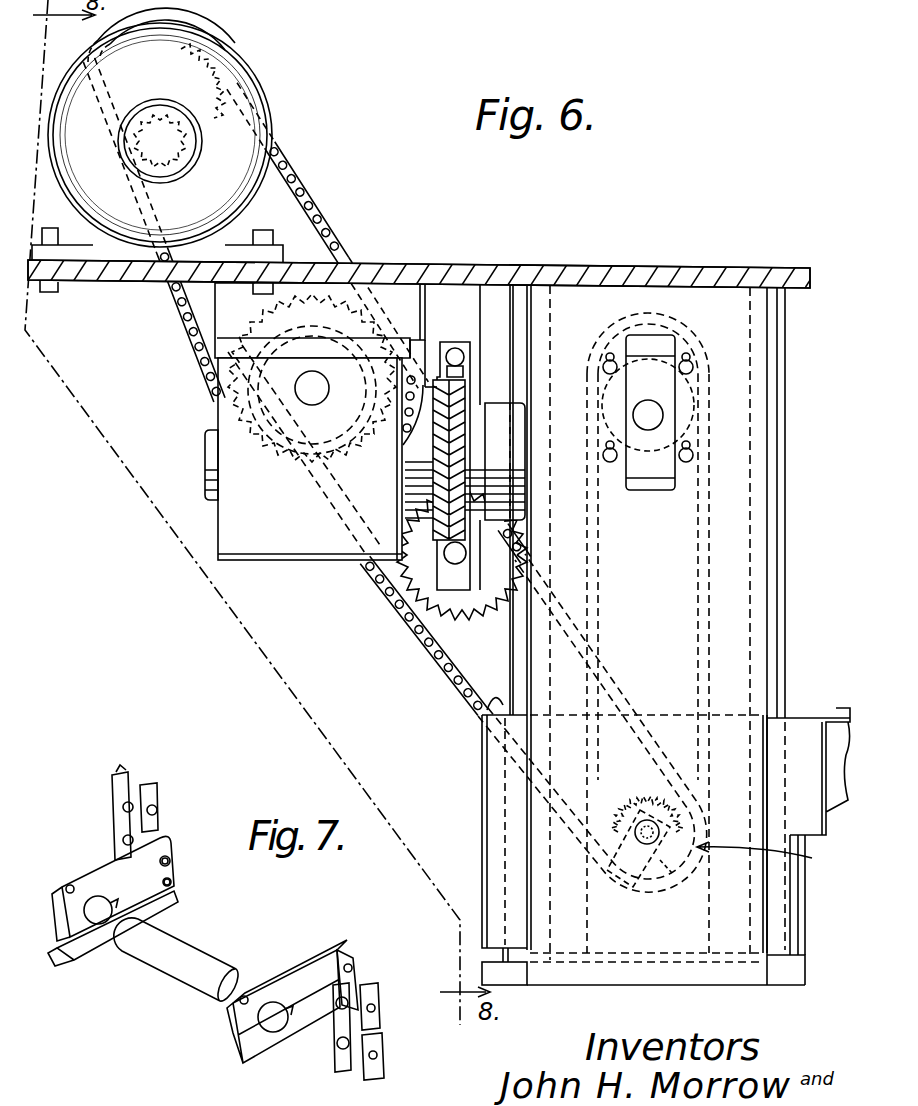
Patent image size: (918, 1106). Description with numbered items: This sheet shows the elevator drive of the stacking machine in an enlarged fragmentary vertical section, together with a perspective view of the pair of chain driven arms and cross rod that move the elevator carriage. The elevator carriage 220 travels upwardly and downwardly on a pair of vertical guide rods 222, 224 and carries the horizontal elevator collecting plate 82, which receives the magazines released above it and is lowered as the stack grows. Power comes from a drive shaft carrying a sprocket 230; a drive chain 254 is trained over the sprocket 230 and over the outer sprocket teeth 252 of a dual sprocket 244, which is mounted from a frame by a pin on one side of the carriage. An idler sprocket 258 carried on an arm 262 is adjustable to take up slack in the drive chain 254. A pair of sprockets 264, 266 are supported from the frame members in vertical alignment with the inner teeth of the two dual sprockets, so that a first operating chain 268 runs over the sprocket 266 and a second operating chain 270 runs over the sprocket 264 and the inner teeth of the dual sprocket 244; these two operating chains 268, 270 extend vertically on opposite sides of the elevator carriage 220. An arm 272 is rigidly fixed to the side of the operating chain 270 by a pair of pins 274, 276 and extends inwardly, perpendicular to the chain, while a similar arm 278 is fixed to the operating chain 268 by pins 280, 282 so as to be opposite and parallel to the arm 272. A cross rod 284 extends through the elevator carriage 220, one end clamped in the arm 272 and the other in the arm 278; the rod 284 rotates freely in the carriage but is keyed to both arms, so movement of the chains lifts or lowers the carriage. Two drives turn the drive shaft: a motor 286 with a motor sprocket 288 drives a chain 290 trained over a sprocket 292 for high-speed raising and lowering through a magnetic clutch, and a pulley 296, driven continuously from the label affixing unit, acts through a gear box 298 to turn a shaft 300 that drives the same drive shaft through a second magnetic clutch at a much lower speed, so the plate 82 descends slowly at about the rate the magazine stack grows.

In FIG. 6, the elevator collecting plate 82 is at (833, 710).
In FIG. 6, the elevator carriage 220 is at (482, 817).
In FIG. 6, the vertical guide rod 222 is at (478, 700).
In FIG. 6, the vertical guide rod 224 is at (783, 620).
In FIG. 6, the sprocket 230 is at (320, 421).
In FIG. 6, the dual sprocket 244 is at (774, 857).
In FIG. 6, the outer sprocket teeth 252 is at (630, 790).
In FIG. 6, the drive chain 254 is at (424, 640).
In FIG. 6, the idler sprocket 258 is at (452, 622).
In FIG. 6, the arm 262 is at (545, 570).
In FIG. 6, the sprocket 264 is at (641, 392).
In FIG. 6, the sprocket 266 is at (648, 378).
In FIG. 6, the first operating chain 268 is at (648, 453).
In FIG. 7, the first operating chain 268 is at (160, 800).
In FIG. 6, the second operating chain 270 is at (693, 563).
In FIG. 7, the second operating chain 270 is at (330, 1068).
In FIG. 6, the arm 272 is at (653, 850).
In FIG. 7, the arm 272 is at (293, 967).
In FIG. 7, the pin 274 is at (350, 970).
In FIG. 7, the pin 276 is at (360, 990).
In FIG. 7, the arm 278 is at (97, 867).
In FIG. 7, the pin 280 is at (168, 858).
In FIG. 7, the pin 282 is at (170, 883).
In FIG. 6, the cross rod 284 is at (672, 873).
In FIG. 7, the cross rod 284 is at (173, 967).
In FIG. 6, the motor 286 is at (243, 138).
In FIG. 6, the motor sprocket 288 is at (225, 90).
In FIG. 6, the chain 290 is at (310, 193).
In FIG. 6, the sprocket 292 is at (367, 293).
In FIG. 6, the pulley 296 is at (440, 503).
In FIG. 6, the gear box 298 is at (277, 553).
In FIG. 6, the shaft 300 is at (316, 400).